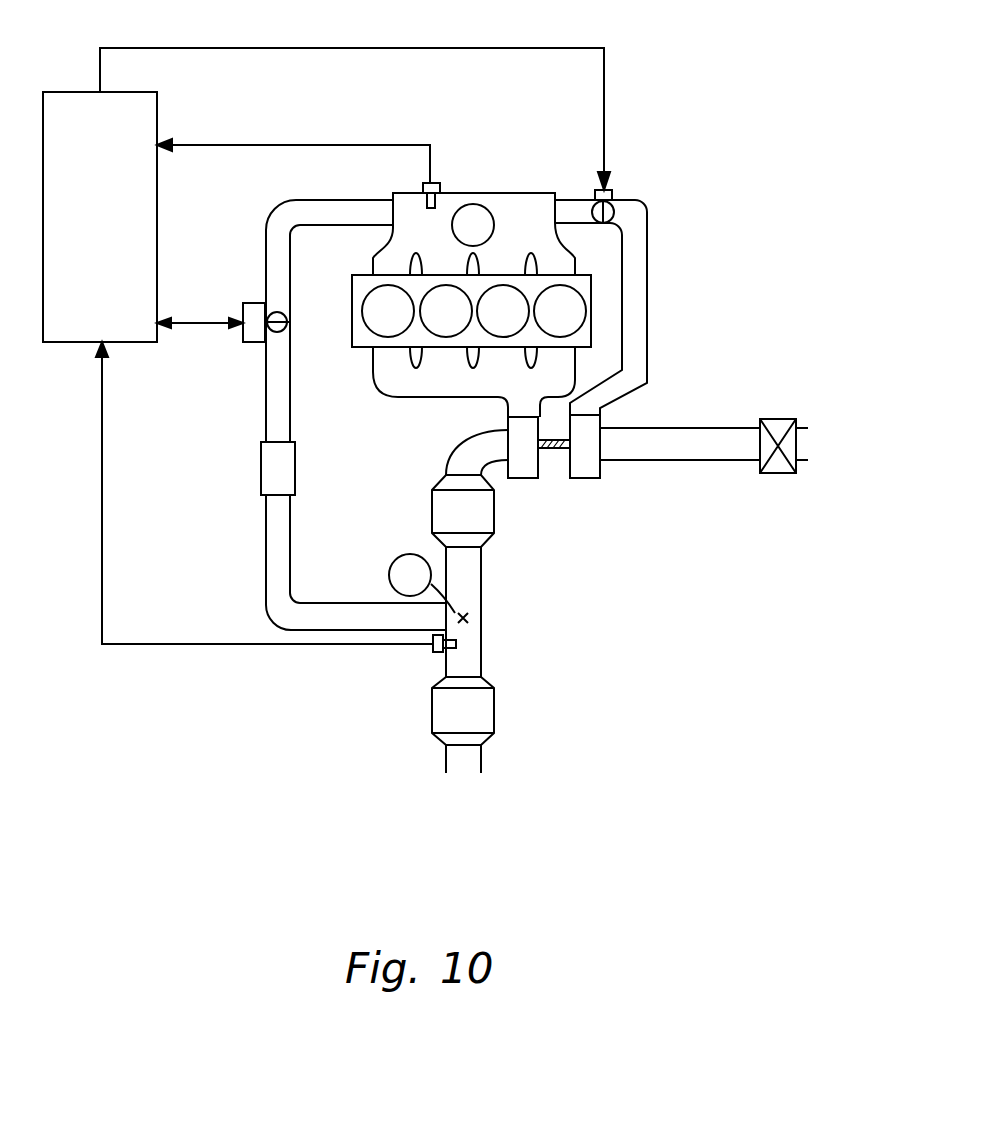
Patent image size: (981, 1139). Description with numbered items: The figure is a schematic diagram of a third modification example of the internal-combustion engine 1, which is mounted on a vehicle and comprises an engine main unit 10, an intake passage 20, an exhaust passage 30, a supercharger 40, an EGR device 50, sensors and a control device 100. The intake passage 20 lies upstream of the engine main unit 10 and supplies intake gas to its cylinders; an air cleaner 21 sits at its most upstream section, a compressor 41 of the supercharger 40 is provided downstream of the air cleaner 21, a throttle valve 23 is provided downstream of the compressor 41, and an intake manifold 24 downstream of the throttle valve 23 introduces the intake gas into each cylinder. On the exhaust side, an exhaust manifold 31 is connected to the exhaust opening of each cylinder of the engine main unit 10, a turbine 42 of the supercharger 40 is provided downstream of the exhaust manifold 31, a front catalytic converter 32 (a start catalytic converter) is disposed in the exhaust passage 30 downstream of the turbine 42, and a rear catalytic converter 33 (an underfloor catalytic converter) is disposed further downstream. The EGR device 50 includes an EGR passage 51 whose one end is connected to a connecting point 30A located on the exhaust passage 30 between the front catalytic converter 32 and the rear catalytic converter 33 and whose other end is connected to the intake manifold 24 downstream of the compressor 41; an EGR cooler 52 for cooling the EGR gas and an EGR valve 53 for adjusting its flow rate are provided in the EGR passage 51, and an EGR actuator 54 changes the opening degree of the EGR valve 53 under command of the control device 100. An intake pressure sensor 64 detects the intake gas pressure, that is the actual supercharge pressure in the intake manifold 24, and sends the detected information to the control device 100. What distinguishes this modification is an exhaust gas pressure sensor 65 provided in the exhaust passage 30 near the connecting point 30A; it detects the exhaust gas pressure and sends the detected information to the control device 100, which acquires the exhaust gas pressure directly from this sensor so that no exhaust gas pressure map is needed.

The internal-combustion engine 1 is at (715, 168).
The engine main unit 10 is at (352, 295).
The intake passage 20 is at (652, 427).
The air cleaner 21 is at (781, 419).
The throttle valve 23 is at (615, 212).
The intake manifold 24 is at (490, 190).
The exhaust passage 30 is at (467, 592).
The connecting point 30A is at (483, 617).
The exhaust manifold 31 is at (381, 397).
The front catalytic converter 32 is at (431, 512).
The rear catalytic converter 33 is at (494, 712).
The supercharger 40 is at (551, 497).
The compressor 41 is at (585, 478).
The turbine 42 is at (520, 478).
The EGR device 50 is at (318, 415).
The EGR passage 51 is at (352, 600).
The EGR cooler 52 is at (258, 482).
The EGR valve 53 is at (280, 330).
The EGR actuator 54 is at (257, 303).
The intake pressure sensor 64 is at (423, 187).
The exhaust gas pressure sensor 65 is at (433, 650).
The control device 100 is at (73, 92).